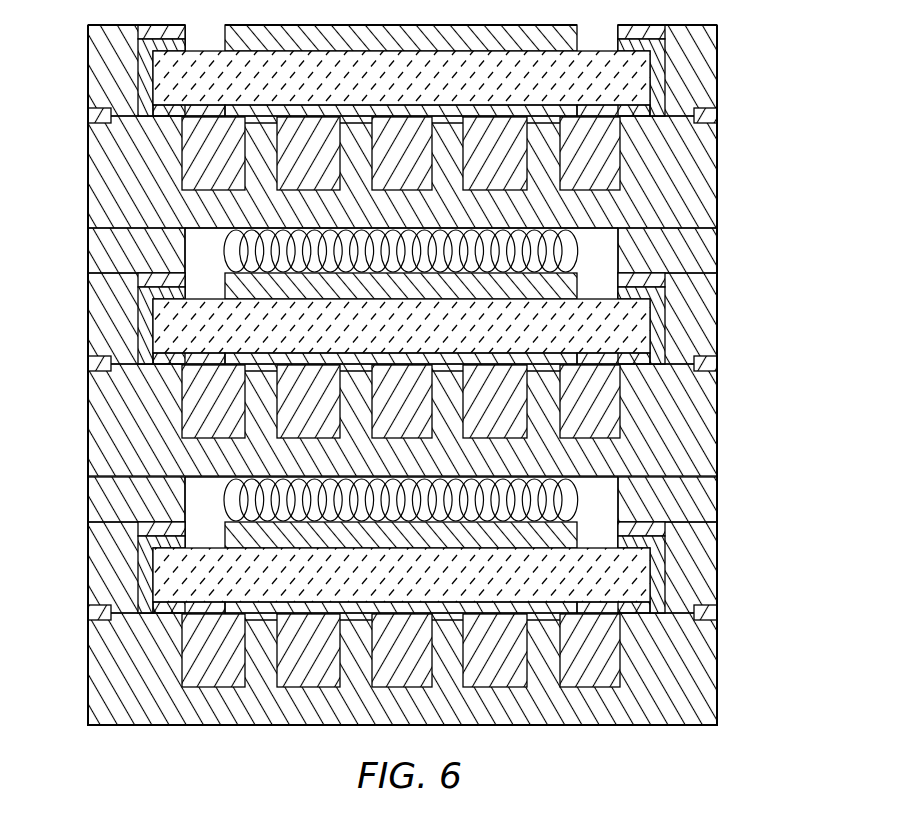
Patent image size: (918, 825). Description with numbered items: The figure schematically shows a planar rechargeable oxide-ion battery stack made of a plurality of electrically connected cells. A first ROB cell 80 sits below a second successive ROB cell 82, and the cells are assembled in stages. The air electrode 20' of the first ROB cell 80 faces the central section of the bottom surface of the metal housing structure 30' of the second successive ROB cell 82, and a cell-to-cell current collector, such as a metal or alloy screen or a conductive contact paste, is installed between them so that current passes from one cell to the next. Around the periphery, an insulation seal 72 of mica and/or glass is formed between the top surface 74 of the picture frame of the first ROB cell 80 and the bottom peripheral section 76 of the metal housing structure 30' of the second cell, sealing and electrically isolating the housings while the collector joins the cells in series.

The air electrode 20' is at (310, 567).
The metal housing structure 30' is at (430, 322).
The insulation seal 72 is at (103, 502).
The top surface of the picture frame 74 is at (110, 525).
The bottom peripheral section of the metal housing structure 76 is at (117, 473).
The first ROB cell 80 is at (418, 590).
The second successive ROB cell 82 is at (420, 352).